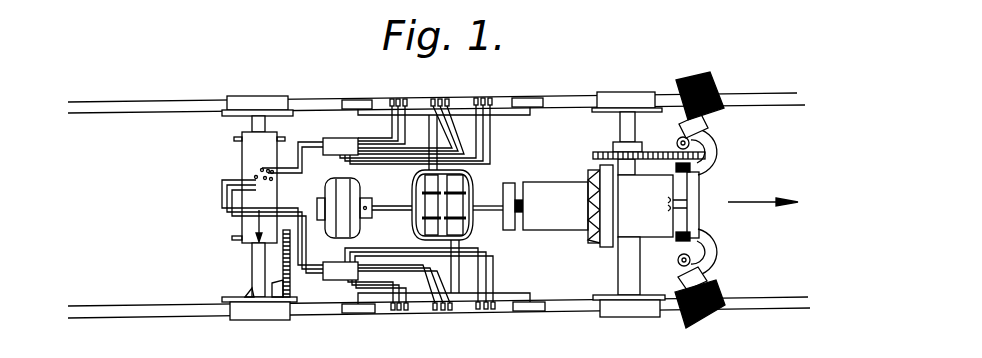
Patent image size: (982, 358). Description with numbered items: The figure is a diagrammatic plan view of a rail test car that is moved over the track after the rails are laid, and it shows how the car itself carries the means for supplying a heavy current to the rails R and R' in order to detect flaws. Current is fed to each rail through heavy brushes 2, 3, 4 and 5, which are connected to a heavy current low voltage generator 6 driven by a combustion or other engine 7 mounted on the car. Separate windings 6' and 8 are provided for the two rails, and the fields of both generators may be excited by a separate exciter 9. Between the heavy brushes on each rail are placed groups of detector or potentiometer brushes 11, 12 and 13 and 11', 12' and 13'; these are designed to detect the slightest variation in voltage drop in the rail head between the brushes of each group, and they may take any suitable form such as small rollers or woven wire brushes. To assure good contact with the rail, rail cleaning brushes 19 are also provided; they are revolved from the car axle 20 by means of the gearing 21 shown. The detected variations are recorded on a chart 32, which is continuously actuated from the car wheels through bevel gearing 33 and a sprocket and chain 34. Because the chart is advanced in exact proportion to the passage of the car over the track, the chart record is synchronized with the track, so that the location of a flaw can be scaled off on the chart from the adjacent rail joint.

The rail R' is at (436, 122).
The rail R is at (439, 327).
The heavy brush 2 is at (352, 315).
The heavy brush 3 is at (540, 311).
The heavy brush 4 is at (347, 101).
The heavy brush 5 is at (535, 99).
The heavy current low voltage generator 6 is at (456, 206).
The winding 6' is at (471, 201).
The engine 7 is at (558, 206).
The winding 8 is at (444, 207).
The exciter 9 is at (342, 203).
The detector brush 11 is at (412, 298).
The detector brush 12 is at (419, 301).
The detector brush 13 is at (425, 301).
The detector brush 11' is at (409, 113).
The detector brush 12' is at (415, 113).
The detector brush 13' is at (421, 113).
The rail cleaning brush 19 is at (705, 209).
The car axle 20 is at (625, 271).
The gearing 21 is at (649, 143).
The chart 32 is at (242, 222).
The bevel gearing 33 is at (253, 286).
The sprocket and chain 34 is at (291, 286).